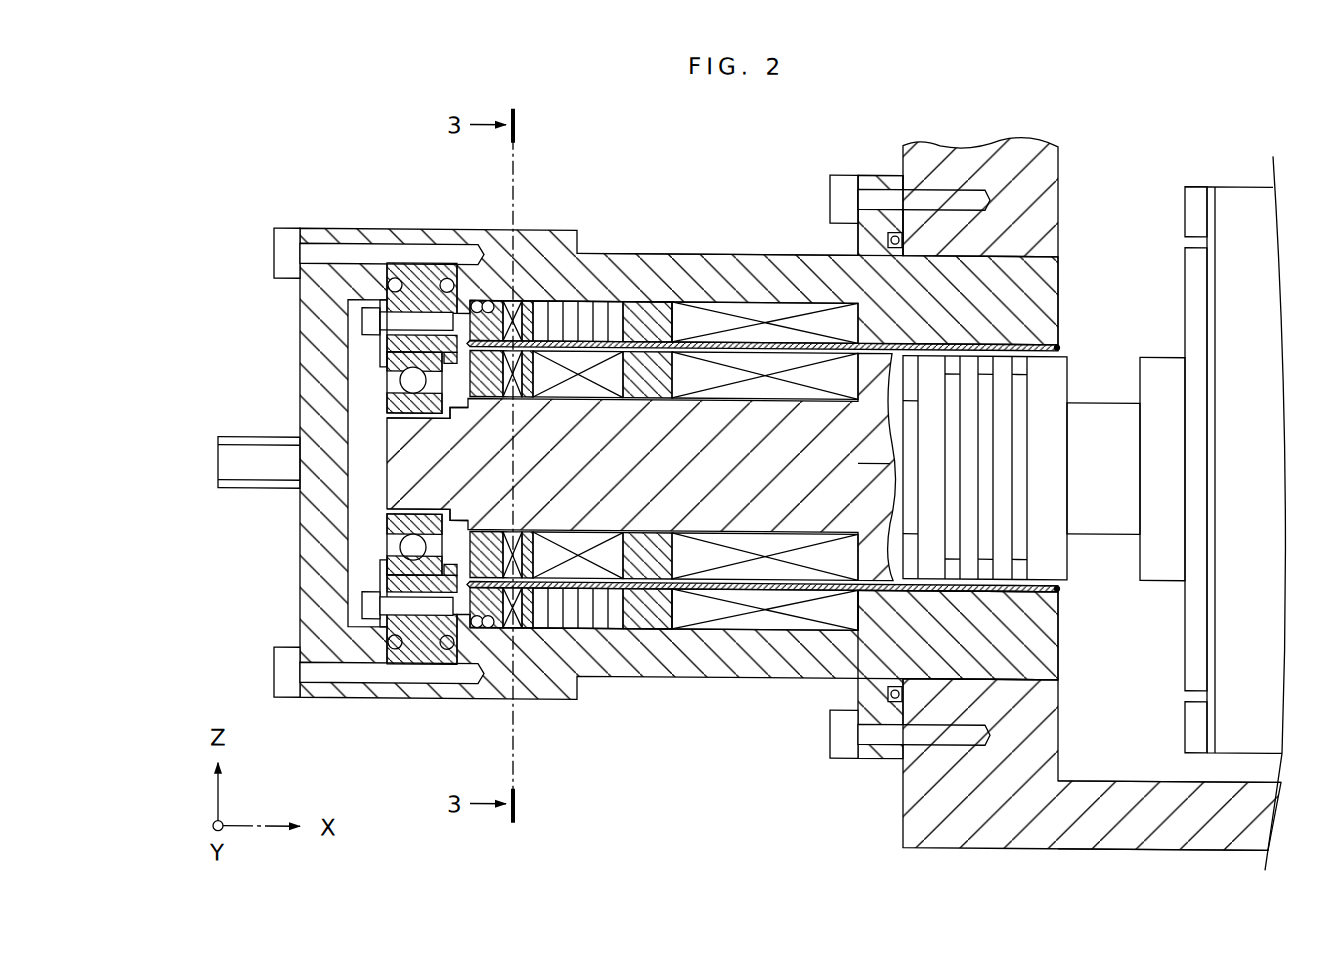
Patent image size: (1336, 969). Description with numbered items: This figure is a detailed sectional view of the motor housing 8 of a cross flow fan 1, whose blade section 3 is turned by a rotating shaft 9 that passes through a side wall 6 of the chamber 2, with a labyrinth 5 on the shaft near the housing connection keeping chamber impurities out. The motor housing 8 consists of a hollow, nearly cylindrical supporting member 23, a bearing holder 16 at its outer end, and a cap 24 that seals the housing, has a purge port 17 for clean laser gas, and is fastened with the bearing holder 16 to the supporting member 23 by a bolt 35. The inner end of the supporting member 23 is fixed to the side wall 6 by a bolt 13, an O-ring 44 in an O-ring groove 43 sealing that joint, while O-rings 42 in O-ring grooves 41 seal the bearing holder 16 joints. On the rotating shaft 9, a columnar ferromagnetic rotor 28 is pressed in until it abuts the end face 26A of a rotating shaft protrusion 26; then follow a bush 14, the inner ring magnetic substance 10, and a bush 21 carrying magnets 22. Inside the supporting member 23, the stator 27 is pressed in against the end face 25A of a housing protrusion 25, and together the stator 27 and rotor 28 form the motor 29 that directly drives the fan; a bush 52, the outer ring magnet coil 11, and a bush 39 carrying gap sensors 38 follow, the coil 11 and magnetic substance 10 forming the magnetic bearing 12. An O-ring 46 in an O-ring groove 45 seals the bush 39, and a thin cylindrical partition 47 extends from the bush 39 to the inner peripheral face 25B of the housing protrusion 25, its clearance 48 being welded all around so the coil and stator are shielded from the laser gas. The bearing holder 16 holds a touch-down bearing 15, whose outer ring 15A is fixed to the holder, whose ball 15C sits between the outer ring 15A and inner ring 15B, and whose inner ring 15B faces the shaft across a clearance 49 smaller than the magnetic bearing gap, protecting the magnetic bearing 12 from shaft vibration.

The cross flow fan 1 is at (1199, 180).
The chamber 2 is at (1035, 847).
The blade section 3 is at (1255, 207).
The labyrinth 5 is at (1065, 356).
The side wall 6 is at (903, 180).
The motor housing 8 is at (670, 176).
The rotating shaft 9 is at (1112, 398).
The inner ring magnetic substance 10 is at (640, 300).
The outer ring magnet coil 11 is at (600, 300).
The magnetic bearing 12 is at (658, 191).
The bolt 13 is at (838, 172).
The bush 14 is at (637, 398).
The touch-down bearing 15 is at (314, 549).
The outer ring 15A is at (393, 562).
The inner ring 15B is at (390, 524).
The ball 15C is at (400, 544).
The bearing holder 16 is at (418, 660).
The purge port 17 is at (228, 438).
The bush 21 is at (496, 412).
The magnet 22 is at (538, 405).
The supporting member 23 is at (473, 690).
The cap 24 is at (347, 690).
The housing protrusion 25 is at (953, 647).
The end face 25A is at (858, 600).
The inner peripheral face 25B is at (1040, 580).
The rotating shaft protrusion 26 is at (870, 365).
The end face 26A is at (882, 462).
The stator 27 is at (740, 300).
The rotor 28 is at (762, 360).
The motor 29 is at (765, 394).
The bolt 35 is at (274, 250).
The gap sensor 38 is at (535, 300).
The bush 39 is at (490, 300).
The O-ring groove 41 is at (420, 352).
The O-ring 42 is at (392, 278).
The O-ring groove 43 is at (900, 232).
The O-ring 44 is at (950, 155).
The O-ring groove 45 is at (440, 300).
The O-ring 46 is at (478, 299).
The partition 47 is at (952, 340).
The clearance 48 is at (467, 340).
The clearance 49 is at (384, 512).
The bush 52 is at (668, 312).